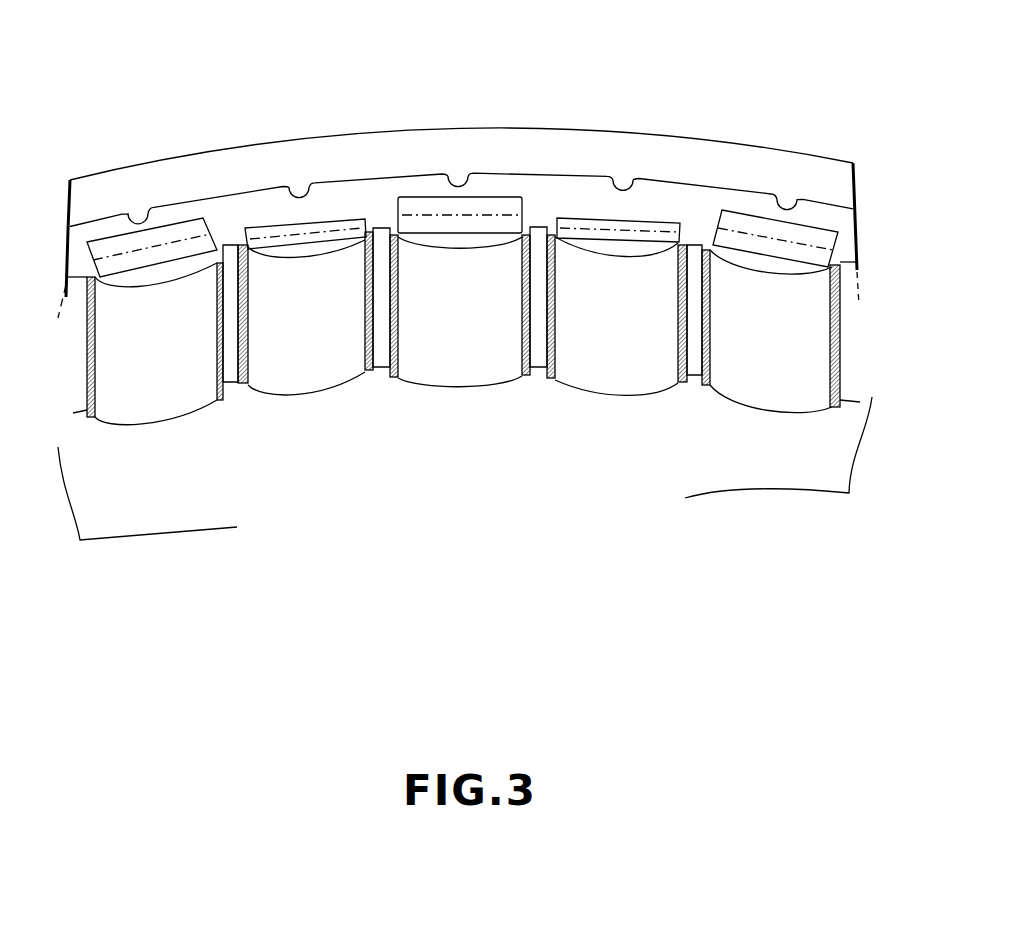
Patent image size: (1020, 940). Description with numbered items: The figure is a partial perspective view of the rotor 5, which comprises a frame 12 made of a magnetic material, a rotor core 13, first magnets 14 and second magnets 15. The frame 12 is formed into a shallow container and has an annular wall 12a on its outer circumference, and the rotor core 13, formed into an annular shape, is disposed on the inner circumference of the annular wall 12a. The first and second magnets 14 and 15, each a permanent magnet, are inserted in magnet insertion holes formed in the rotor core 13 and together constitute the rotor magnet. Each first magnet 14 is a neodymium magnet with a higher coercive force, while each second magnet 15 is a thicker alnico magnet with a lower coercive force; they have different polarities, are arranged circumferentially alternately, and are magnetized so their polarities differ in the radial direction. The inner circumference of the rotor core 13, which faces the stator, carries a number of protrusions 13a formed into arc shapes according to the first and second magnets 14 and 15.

The rotor 5 is at (562, 127).
The frame 12 is at (808, 463).
The annular wall 12a is at (668, 133).
The rotor core 13 is at (373, 193).
The protrusions 13a is at (320, 375).
The first magnets 14 is at (267, 222).
The second magnets 15 is at (117, 233).